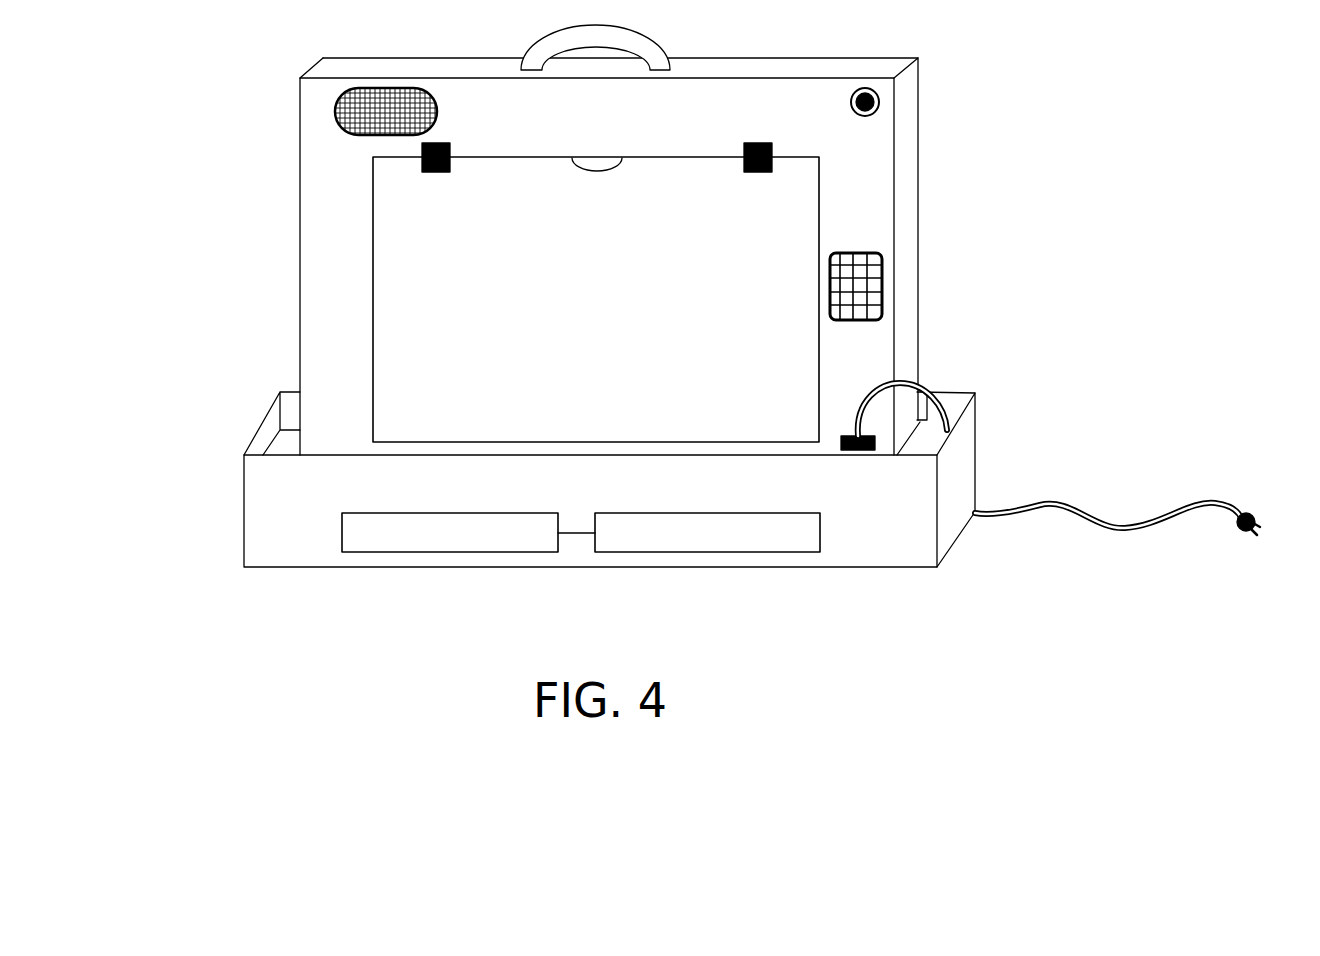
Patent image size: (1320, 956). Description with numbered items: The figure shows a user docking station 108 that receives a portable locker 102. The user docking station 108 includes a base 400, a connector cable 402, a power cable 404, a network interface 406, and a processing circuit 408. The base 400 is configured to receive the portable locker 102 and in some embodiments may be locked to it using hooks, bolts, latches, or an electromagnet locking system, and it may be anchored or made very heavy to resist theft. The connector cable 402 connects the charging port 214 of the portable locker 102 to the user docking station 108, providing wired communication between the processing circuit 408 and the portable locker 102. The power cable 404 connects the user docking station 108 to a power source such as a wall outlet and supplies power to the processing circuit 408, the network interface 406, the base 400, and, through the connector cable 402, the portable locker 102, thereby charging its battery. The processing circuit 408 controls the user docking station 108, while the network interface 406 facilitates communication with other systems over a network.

The portable locker 102 is at (249, 103).
The user docking station 108 is at (701, 471).
The charging port 214 is at (855, 434).
The base 400 is at (277, 463).
The connector cable 402 is at (907, 384).
The power cable 404 is at (1073, 512).
The network interface 406 is at (417, 546).
The processing circuit 408 is at (670, 547).